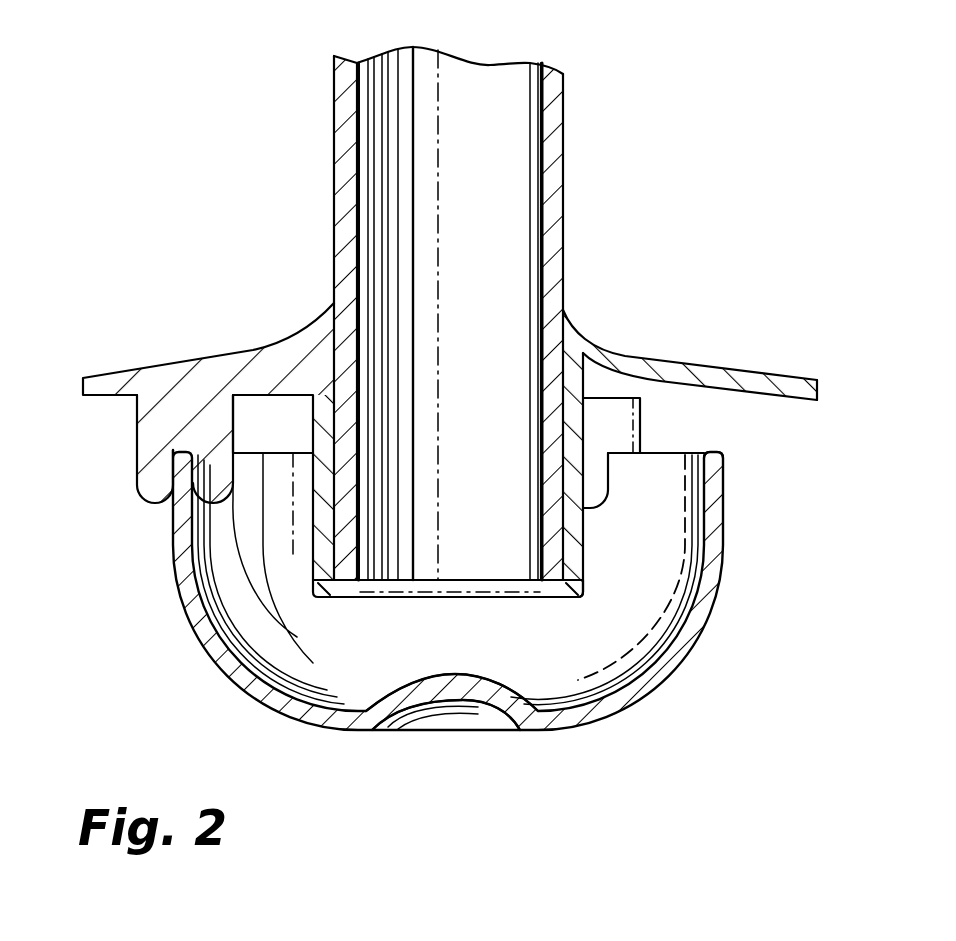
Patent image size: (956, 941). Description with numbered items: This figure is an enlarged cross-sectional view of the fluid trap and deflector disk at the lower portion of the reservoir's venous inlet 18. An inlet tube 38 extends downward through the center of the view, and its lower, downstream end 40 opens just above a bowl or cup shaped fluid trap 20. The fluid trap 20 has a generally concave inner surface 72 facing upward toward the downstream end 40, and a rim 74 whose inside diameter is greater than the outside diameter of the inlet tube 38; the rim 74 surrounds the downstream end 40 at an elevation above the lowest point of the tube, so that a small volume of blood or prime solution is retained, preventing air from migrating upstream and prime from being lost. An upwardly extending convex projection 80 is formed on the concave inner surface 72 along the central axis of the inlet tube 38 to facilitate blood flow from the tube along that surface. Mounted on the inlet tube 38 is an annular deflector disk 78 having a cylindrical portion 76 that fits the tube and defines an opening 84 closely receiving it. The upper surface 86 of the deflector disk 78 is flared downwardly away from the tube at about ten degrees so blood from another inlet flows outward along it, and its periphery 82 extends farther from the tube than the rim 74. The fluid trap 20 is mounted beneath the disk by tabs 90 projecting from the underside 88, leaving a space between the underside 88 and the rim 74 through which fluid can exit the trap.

The venous inlet 18 is at (572, 80).
The inlet tube 38 is at (566, 127).
The upper surface 86 is at (255, 350).
The tabs 90 is at (137, 457).
The deflector disk 78 is at (684, 354).
The opening 84 is at (553, 316).
The periphery 82 is at (820, 387).
The underside 88 is at (698, 390).
The cylindrical portion 76 is at (585, 528).
The downstream end 40 is at (508, 598).
The fluid trap 20 is at (722, 586).
The rim 74 is at (718, 450).
The concave inner surface 72 is at (630, 672).
The convex projection 80 is at (458, 675).